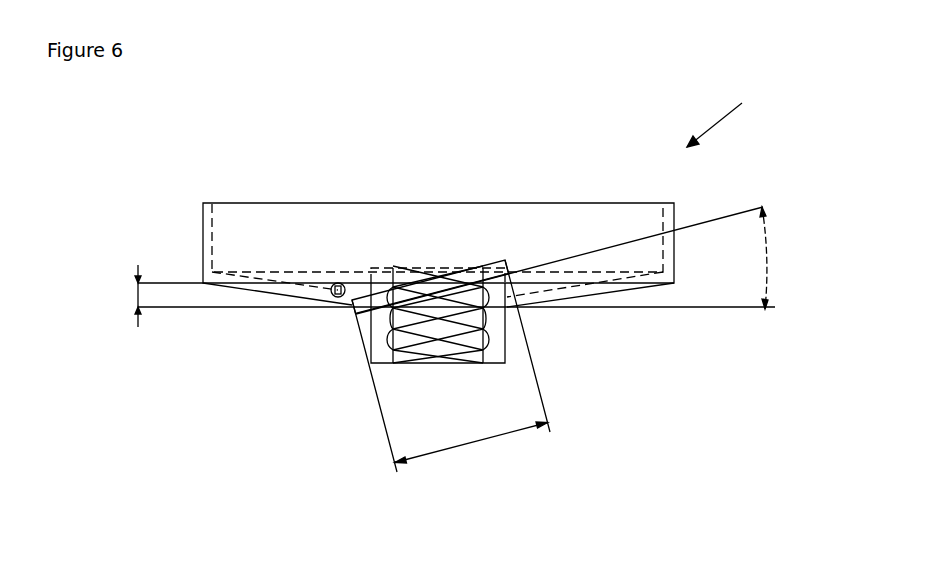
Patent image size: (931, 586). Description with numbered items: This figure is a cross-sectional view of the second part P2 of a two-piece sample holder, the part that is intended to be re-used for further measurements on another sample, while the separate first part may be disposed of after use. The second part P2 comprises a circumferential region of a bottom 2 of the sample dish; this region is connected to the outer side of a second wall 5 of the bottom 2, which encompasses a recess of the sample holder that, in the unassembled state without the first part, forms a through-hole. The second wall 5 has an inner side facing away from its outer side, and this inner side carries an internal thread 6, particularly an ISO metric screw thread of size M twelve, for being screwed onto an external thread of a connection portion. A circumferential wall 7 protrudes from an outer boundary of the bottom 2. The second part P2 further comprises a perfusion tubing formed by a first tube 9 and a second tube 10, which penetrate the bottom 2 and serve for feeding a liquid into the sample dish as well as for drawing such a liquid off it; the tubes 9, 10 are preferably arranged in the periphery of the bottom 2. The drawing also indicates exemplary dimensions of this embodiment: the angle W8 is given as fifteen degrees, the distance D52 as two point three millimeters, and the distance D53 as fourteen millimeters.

The bottom 2 is at (285, 297).
The second wall 5 is at (500, 345).
The thread 6 is at (413, 340).
The circumferential wall 7 is at (203, 232).
The first tube 9 is at (485, 262).
The second tube 10 is at (331, 284).
The second part P2 is at (735, 115).
The angle W8 is at (762, 259).
The dimension D52 is at (138, 297).
The dimension D53 is at (468, 445).